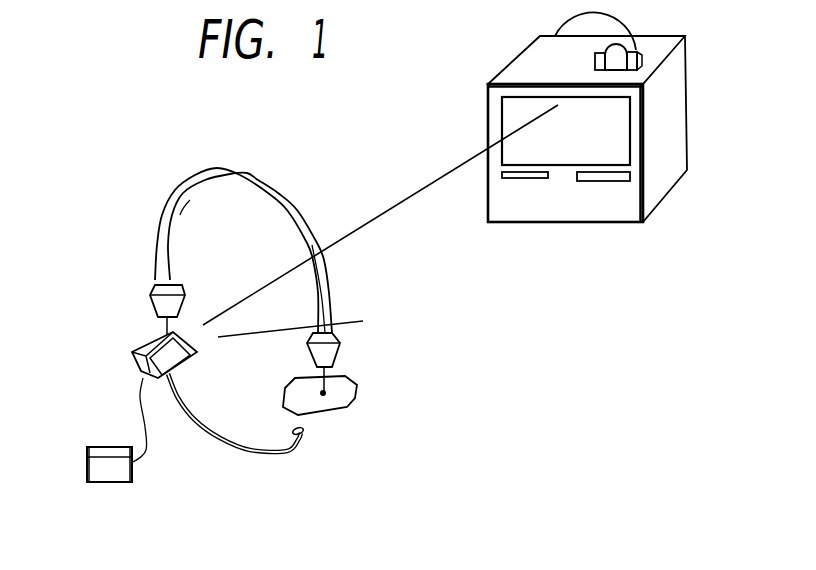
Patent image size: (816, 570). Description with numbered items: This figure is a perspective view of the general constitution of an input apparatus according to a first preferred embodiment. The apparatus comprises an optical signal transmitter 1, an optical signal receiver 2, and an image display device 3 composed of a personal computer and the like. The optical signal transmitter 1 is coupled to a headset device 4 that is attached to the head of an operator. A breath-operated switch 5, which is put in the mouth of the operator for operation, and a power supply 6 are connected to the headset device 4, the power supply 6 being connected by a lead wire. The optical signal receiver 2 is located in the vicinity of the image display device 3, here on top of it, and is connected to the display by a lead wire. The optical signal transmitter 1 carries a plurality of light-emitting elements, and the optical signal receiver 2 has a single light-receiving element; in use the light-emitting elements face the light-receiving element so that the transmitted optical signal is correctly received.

The optical signal transmitter 1 is at (163, 382).
The optical signal receiver 2 is at (640, 53).
The image display device 3 is at (632, 127).
The headset device 4 is at (342, 350).
The breath-operated switch 5 is at (245, 452).
The power supply 6 is at (105, 483).